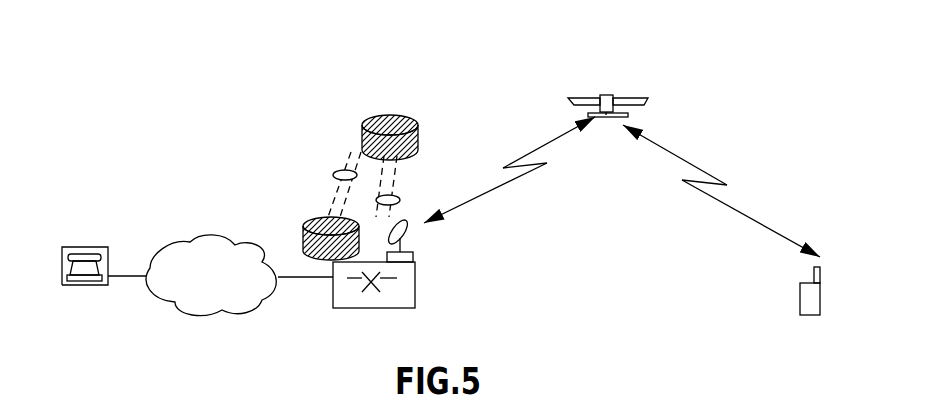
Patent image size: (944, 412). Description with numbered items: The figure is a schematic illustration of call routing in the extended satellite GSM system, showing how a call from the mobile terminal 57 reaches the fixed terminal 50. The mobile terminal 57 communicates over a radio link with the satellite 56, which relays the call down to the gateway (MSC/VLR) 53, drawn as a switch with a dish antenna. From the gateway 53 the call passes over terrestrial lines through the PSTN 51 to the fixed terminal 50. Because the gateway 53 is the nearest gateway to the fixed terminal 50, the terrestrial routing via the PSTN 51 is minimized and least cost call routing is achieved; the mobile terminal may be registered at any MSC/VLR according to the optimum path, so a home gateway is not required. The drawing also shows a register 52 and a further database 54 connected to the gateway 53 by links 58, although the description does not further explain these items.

The fixed terminal 50 is at (62, 287).
The PSTN 51 is at (190, 240).
The visitor location register (VLR) 52 is at (310, 218).
The gateway (MSC/VLR) 53 is at (380, 308).
The home location register database 54 is at (406, 117).
The satellite 56 is at (648, 102).
The mobile terminal 57 is at (800, 297).
The signaling links 58 is at (376, 200).